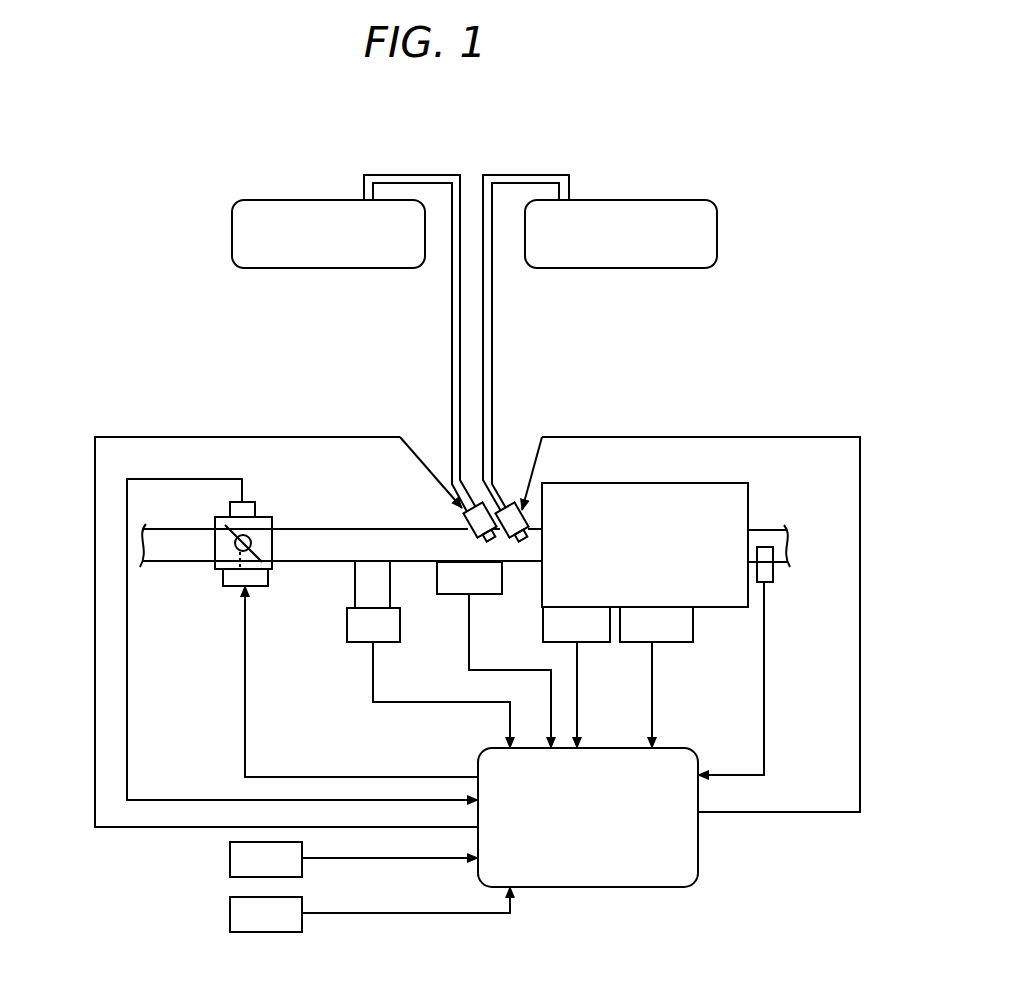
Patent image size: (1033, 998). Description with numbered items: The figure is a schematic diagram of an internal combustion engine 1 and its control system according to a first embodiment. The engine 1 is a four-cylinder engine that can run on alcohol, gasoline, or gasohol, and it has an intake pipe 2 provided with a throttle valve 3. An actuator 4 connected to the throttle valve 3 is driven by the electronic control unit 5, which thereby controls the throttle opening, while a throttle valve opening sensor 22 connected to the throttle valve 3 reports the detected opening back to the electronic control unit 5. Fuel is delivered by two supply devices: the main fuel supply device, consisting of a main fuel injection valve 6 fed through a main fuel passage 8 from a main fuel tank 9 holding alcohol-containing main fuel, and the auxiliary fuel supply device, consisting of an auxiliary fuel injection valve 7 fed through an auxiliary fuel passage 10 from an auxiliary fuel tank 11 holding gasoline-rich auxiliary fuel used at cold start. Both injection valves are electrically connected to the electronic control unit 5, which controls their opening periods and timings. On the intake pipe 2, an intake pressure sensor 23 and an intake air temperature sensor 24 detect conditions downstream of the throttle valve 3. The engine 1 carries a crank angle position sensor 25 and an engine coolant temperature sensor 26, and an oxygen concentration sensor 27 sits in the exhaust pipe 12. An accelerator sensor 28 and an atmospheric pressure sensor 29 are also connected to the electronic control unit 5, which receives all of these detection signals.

The internal combustion engine 1 is at (655, 483).
The intake pipe 2 is at (298, 563).
The throttle valve 3 is at (253, 532).
The actuator 4 is at (238, 588).
The electronic control unit 5 is at (700, 832).
The main fuel injection valve 6 is at (517, 497).
The auxiliary fuel injection valve 7 is at (466, 521).
The main fuel passage 8 is at (492, 362).
The main fuel tank 9 is at (650, 200).
The auxiliary fuel passage 10 is at (452, 316).
The auxiliary fuel tank 11 is at (280, 200).
The exhaust pipe 12 is at (780, 528).
The throttle valve opening sensor 22 is at (234, 501).
The intake pressure sensor 23 is at (352, 644).
The intake air temperature sensor 24 is at (491, 596).
The crank angle position sensor 25 is at (599, 644).
The engine coolant temperature sensor 26 is at (664, 644).
The oxygen concentration sensor 27 is at (768, 584).
The accelerator sensor 28 is at (230, 850).
The atmospheric pressure sensor 29 is at (230, 905).